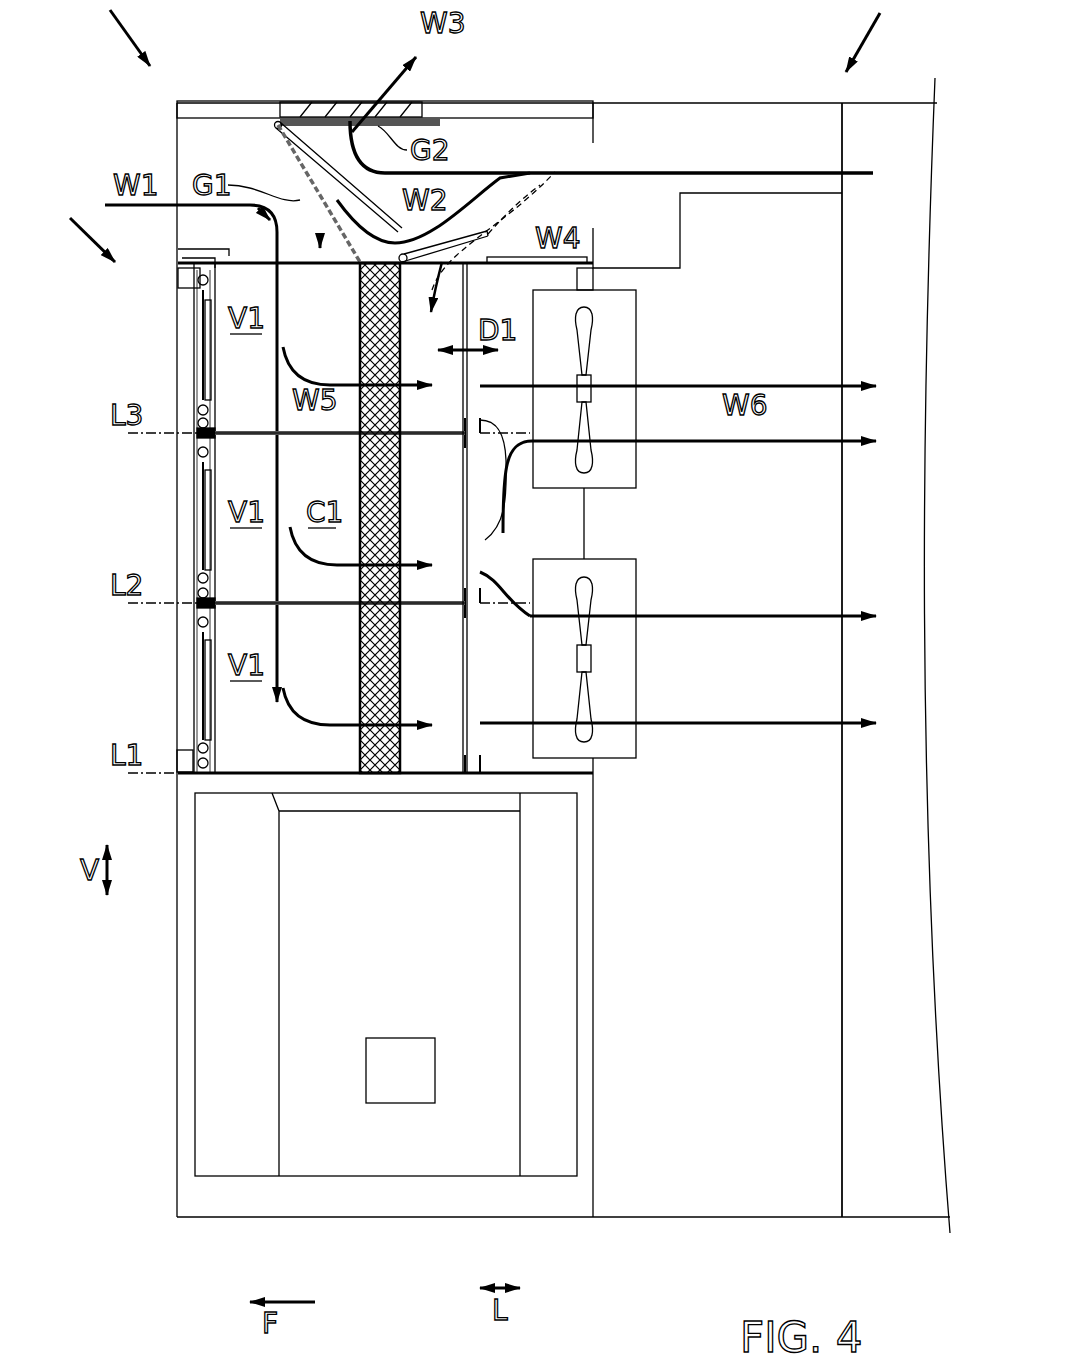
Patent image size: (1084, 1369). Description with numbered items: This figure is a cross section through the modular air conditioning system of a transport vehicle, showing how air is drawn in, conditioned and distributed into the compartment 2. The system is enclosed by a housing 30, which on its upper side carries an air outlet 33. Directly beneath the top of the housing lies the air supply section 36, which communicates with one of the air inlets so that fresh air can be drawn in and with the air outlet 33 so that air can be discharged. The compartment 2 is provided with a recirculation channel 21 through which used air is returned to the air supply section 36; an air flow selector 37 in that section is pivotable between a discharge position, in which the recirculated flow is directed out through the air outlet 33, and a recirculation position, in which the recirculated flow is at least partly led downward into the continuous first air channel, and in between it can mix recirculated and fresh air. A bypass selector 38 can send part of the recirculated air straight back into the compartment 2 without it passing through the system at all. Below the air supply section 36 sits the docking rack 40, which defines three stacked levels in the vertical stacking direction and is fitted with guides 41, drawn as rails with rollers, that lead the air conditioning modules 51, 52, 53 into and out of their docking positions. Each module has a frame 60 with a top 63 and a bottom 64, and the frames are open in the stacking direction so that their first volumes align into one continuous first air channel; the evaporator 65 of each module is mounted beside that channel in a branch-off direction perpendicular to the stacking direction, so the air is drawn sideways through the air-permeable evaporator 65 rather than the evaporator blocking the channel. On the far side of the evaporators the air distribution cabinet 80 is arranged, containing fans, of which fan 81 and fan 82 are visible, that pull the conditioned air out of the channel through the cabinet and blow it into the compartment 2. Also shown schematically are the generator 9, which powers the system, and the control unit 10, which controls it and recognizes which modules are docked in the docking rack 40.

The compartment 2 is at (902, 256).
The generator 9 is at (418, 992).
The control unit 10 is at (415, 1088).
The recirculation channel 21 is at (692, 103).
The housing 30 is at (240, 101).
The air outlet 33 is at (330, 101).
The air supply section 36 is at (510, 101).
The air flow selector 37 is at (300, 168).
The bypass selector 38 is at (500, 222).
The docking rack 40 is at (133, 481).
The guides 41 is at (200, 432).
The air conditioning module 51 is at (203, 688).
The air conditioning module 52 is at (203, 520).
The air conditioning module 53 is at (203, 352).
The frame 60 is at (195, 314).
The top 63 is at (250, 262).
The bottom 64 is at (360, 518).
The evaporator 65 is at (360, 326).
The air distribution cabinet 80 is at (690, 1180).
The fan 81 is at (628, 565).
The fan 82 is at (628, 325).